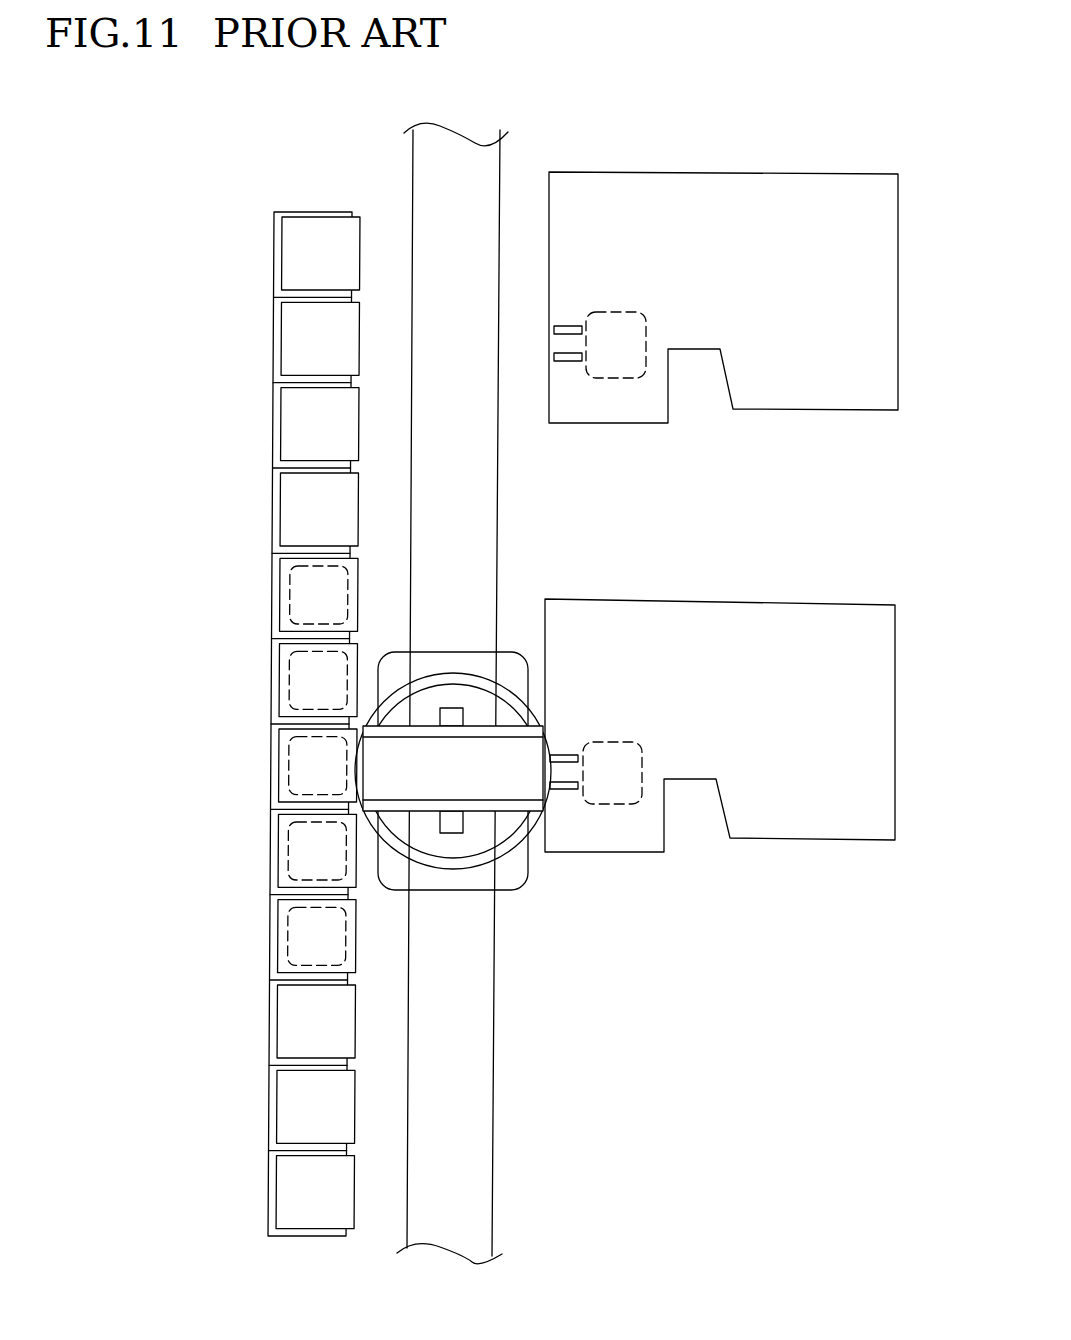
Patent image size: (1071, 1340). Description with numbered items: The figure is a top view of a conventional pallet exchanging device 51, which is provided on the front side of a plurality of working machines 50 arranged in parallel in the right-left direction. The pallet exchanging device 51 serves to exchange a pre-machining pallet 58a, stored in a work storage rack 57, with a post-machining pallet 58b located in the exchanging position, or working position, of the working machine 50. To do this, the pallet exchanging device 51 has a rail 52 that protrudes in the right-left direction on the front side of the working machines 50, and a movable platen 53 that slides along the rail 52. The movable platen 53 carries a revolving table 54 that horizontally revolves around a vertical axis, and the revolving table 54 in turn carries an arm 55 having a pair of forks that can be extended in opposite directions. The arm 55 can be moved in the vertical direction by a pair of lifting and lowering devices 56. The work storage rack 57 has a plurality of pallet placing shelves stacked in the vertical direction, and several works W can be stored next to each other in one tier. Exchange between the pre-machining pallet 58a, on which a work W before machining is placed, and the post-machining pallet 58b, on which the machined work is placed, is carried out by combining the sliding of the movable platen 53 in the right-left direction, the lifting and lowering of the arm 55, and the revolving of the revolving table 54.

The working machine 50 is at (874, 143).
The pallet exchanging device 51 is at (254, 678).
The rail 52 is at (483, 1037).
The movable platen 53 is at (512, 668).
The revolving table 54 is at (483, 835).
The arm 55 is at (515, 737).
The lifting and lowering device 56 is at (451, 718).
The work storage rack 57 is at (268, 1092).
The pre-machining pallet 58a is at (280, 945).
The post-machining pallet 58b is at (614, 795).
The work W is at (290, 257).